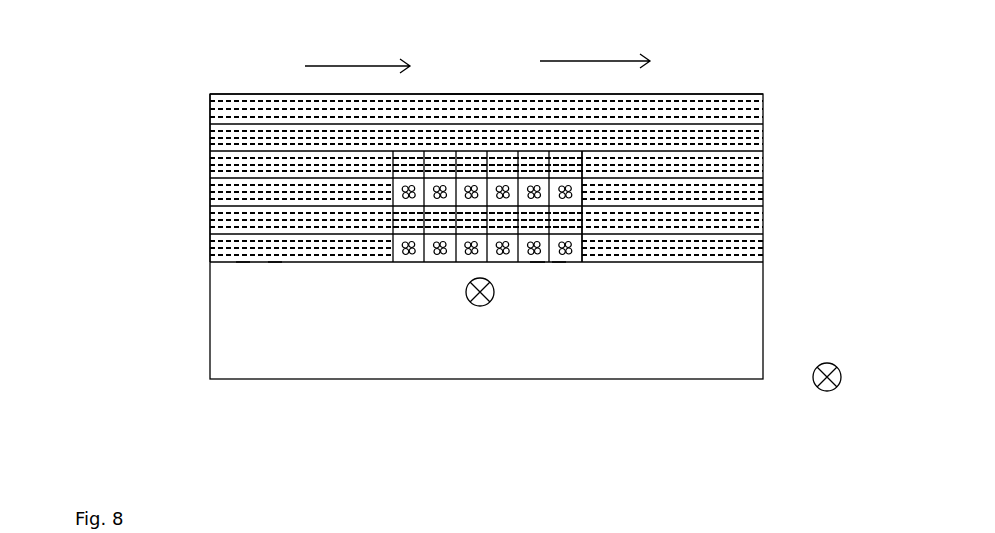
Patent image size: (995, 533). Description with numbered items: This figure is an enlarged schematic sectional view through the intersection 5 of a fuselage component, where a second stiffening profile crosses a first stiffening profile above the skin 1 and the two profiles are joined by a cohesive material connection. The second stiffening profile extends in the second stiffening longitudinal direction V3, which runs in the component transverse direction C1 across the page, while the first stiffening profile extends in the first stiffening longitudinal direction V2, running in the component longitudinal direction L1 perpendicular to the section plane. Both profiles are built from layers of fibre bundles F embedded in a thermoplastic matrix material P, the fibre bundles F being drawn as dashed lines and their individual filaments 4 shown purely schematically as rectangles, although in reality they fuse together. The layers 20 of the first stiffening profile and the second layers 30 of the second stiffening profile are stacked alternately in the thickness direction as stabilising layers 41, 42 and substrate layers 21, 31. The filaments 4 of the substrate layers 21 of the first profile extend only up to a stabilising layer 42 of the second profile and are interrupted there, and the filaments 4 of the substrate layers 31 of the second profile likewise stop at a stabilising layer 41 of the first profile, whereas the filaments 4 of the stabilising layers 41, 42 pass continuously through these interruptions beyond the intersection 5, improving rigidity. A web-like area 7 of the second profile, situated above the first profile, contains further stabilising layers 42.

The skin 1 is at (400, 367).
The second layers 30 is at (208, 133).
The stabilising layer 42 is at (422, 133).
The substrate layer 31 is at (425, 196).
The layers 20 is at (590, 153).
The substrate layer 21 is at (630, 175).
The stabilising layer 41 is at (628, 241).
The web-like area 7 is at (634, 106).
The intersection 5 is at (485, 80).
The filaments 4 is at (210, 259).
The fibre bundles F is at (242, 263).
The thermoplastic matrix material P is at (274, 258).
The component transverse direction C1 is at (347, 66).
The second stiffening longitudinal direction V3 is at (583, 61).
The first stiffening longitudinal direction V2 is at (486, 306).
The component longitudinal direction L1 is at (833, 391).